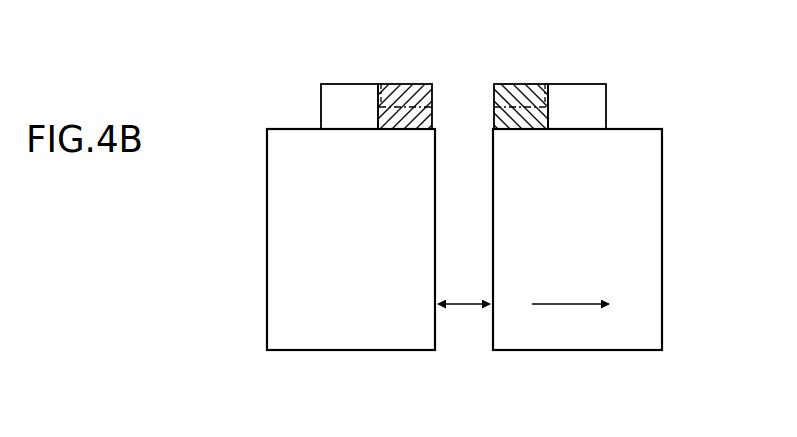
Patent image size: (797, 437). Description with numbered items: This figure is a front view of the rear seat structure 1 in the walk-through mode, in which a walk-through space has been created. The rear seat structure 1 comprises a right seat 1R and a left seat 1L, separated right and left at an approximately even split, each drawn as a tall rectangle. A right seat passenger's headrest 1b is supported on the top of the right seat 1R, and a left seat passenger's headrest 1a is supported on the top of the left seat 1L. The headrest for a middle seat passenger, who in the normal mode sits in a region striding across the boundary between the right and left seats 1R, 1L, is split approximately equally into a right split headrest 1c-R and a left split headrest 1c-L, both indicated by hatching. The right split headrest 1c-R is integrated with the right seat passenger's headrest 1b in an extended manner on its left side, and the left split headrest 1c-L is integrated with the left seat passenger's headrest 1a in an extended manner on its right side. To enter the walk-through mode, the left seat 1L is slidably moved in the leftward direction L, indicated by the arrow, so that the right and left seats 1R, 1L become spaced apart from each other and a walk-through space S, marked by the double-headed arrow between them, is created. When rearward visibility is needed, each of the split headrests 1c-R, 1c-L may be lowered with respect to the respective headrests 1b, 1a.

The rear seat structure 1 is at (675, 116).
The right seat 1R is at (324, 187).
The left seat 1L is at (602, 187).
The left seat passenger's headrest 1a is at (578, 88).
The right seat passenger's headrest 1b is at (345, 88).
The right split headrest 1c-R is at (404, 92).
The left split headrest 1c-L is at (517, 92).
The walk-through space S is at (462, 308).
The leftward direction L is at (572, 308).